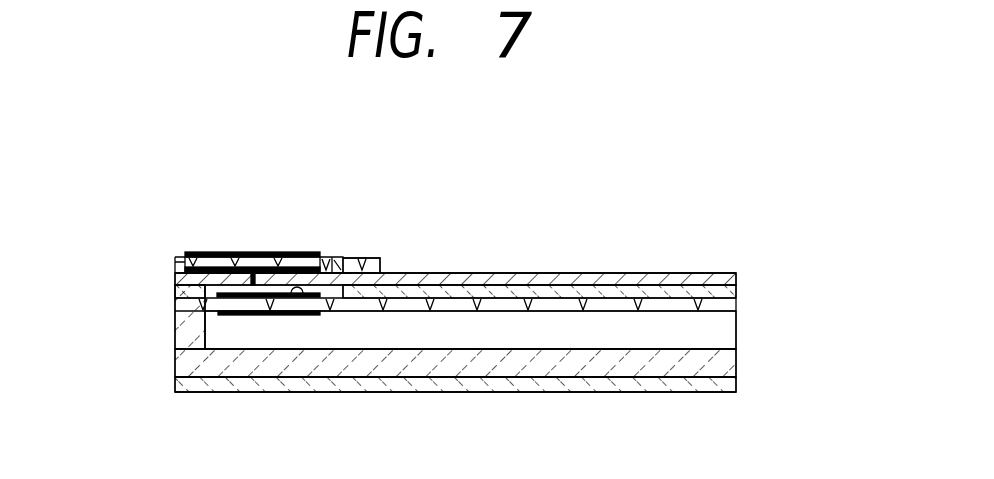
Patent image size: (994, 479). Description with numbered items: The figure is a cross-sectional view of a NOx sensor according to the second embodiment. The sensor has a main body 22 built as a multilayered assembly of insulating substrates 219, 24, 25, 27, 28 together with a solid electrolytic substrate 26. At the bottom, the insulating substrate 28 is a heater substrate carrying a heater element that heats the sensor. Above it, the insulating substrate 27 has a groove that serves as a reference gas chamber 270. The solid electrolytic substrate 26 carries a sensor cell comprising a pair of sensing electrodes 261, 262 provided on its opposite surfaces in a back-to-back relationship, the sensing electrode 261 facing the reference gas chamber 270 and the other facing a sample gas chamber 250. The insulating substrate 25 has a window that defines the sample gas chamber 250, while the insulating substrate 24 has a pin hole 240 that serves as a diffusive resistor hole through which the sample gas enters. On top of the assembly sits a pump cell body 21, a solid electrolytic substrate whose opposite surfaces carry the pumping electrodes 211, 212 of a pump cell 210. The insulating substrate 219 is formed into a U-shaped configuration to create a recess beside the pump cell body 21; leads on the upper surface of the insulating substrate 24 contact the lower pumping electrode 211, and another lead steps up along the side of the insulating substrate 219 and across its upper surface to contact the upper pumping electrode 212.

The pump cell body 21 is at (167, 260).
The main body 22 is at (158, 277).
The insulating substrate 24 is at (605, 282).
The insulating substrate 25 is at (688, 290).
The solid electrolytic substrate 26 is at (732, 308).
The insulating substrate 27 is at (728, 365).
The insulating substrate 28 is at (732, 385).
The pump cell 210 is at (183, 256).
The pumping electrode 211 is at (308, 257).
The pumping electrode 212 is at (222, 250).
The insulating substrate 219 is at (380, 267).
The pin hole 240 is at (255, 250).
The sample gas chamber 250 is at (332, 262).
The sensing electrode 261 is at (282, 315).
The sensing electrode 262 is at (310, 297).
The reference gas chamber 270 is at (610, 330).